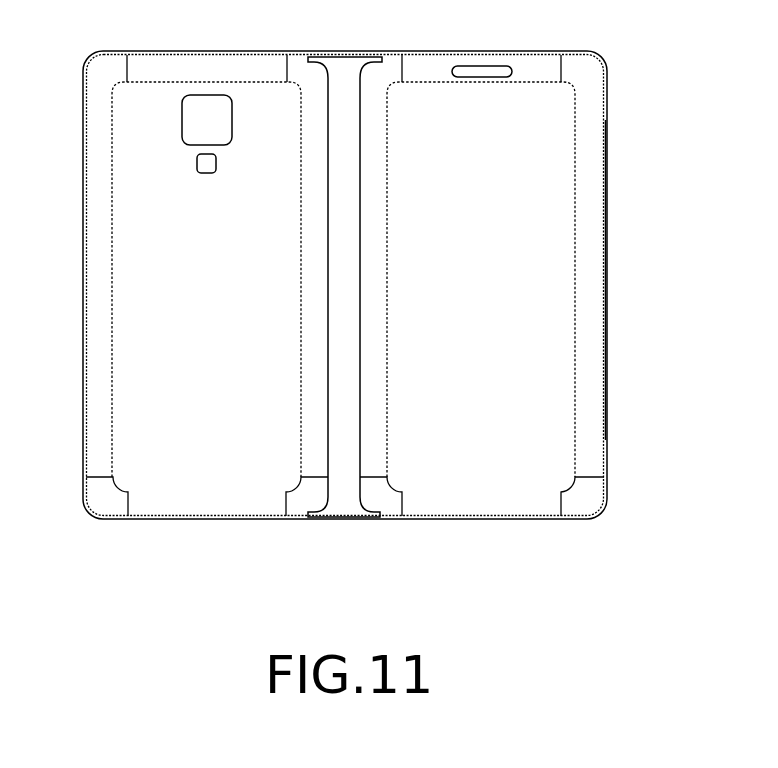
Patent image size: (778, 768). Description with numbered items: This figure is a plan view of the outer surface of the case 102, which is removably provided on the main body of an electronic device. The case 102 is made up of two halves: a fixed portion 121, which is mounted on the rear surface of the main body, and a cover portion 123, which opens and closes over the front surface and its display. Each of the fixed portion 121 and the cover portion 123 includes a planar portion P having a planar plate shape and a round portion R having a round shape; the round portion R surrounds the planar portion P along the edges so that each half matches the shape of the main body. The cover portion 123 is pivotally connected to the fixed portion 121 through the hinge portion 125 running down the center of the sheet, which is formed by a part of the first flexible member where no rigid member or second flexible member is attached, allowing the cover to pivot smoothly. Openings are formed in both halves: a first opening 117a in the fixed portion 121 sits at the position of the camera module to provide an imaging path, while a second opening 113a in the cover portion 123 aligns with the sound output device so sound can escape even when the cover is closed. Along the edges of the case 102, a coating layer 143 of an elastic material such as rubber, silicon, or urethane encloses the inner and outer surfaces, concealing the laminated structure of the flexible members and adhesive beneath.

The case 102 is at (612, 58).
The second opening 113a is at (478, 66).
The first opening 117a is at (204, 107).
The fixed portion 121 is at (87, 537).
The cover portion 123 is at (553, 537).
The hinge portion 125 is at (345, 500).
The coating layer 143 is at (607, 165).
The planar portion P is at (540, 296).
The round portion R is at (98, 202).